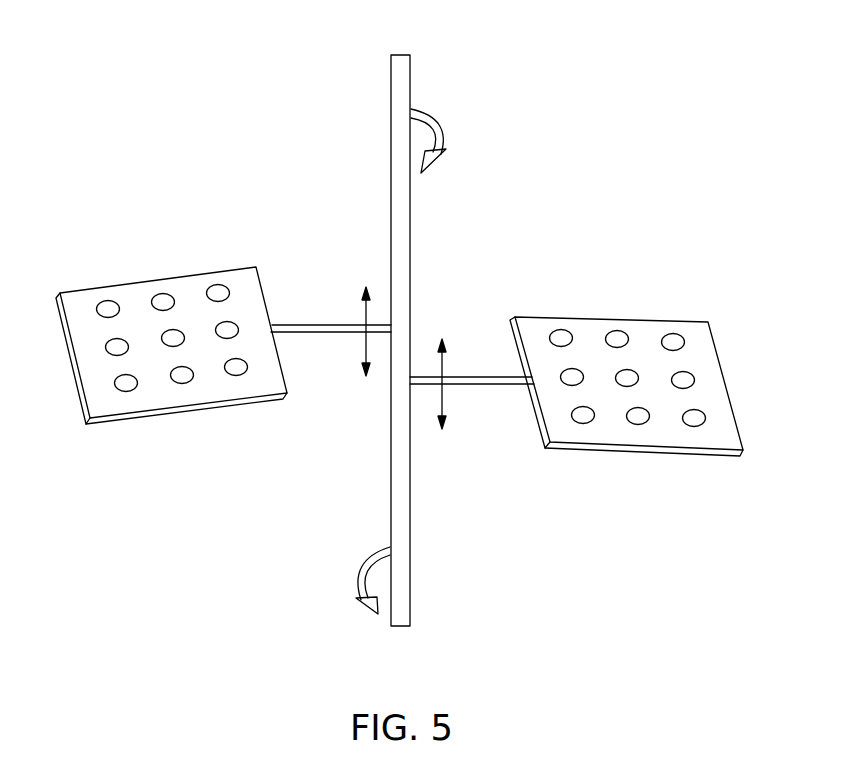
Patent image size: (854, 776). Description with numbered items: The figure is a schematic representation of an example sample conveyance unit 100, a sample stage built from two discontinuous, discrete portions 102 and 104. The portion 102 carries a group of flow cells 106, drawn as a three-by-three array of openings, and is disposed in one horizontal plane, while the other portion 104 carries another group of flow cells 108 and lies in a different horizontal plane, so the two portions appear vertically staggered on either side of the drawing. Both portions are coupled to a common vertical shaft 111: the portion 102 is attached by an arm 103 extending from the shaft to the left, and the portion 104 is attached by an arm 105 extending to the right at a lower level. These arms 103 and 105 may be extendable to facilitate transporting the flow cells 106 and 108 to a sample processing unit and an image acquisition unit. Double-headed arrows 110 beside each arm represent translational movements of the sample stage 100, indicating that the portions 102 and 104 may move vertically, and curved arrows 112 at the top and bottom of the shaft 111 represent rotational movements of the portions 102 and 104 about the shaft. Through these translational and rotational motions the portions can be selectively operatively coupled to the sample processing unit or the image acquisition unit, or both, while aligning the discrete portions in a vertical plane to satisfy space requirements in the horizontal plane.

The sample conveyance unit 100 is at (728, 343).
The portion 102 is at (80, 299).
The arm 103 is at (313, 324).
The portion 104 is at (700, 328).
The arm 105 is at (508, 386).
The flow cells 106 is at (218, 293).
The flow cells 108 is at (673, 342).
The arrows 110 is at (362, 370).
The common shaft 111 is at (391, 84).
The arrows 112 is at (432, 112).